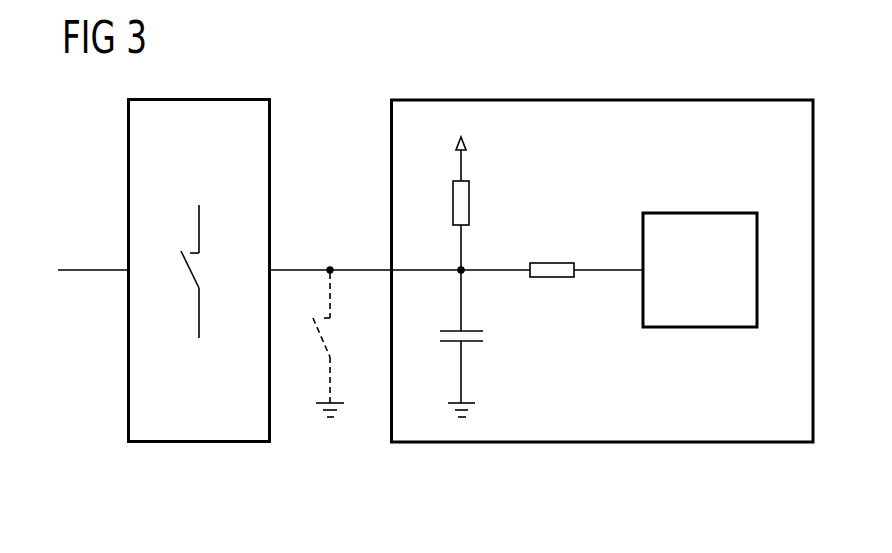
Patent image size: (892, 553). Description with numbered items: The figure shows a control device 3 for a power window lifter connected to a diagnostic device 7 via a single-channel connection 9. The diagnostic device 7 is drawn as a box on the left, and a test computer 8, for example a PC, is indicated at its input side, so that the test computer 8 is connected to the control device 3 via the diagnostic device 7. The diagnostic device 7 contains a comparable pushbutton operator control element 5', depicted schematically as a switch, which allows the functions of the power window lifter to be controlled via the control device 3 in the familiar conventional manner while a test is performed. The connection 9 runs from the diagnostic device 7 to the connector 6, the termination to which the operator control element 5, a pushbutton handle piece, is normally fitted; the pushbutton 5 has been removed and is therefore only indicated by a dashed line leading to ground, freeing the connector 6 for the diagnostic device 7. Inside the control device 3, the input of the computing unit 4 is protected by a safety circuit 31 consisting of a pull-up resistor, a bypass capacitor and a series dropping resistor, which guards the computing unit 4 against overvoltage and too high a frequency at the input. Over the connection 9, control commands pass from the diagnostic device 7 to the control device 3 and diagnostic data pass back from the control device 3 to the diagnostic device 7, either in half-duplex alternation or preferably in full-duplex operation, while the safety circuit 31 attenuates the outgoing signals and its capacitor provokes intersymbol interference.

The control device 3 is at (602, 442).
The computing unit 4 is at (702, 212).
The operator control element 5 is at (311, 345).
The pushbutton operator control element 5' is at (171, 271).
The connector 6 is at (330, 266).
The diagnostic device 7 is at (205, 442).
The test computer 8 is at (90, 268).
The connection 9 is at (292, 267).
The safety circuit 31 is at (518, 197).